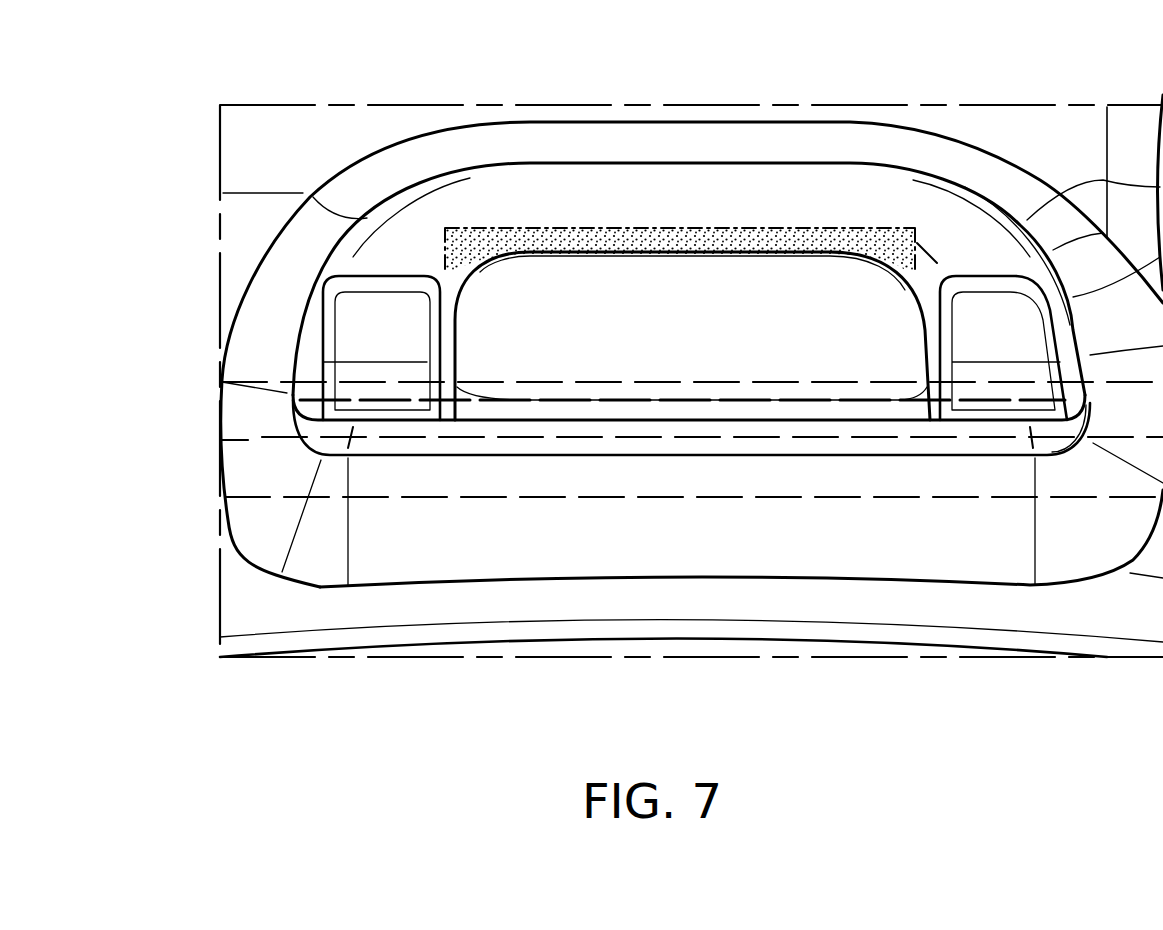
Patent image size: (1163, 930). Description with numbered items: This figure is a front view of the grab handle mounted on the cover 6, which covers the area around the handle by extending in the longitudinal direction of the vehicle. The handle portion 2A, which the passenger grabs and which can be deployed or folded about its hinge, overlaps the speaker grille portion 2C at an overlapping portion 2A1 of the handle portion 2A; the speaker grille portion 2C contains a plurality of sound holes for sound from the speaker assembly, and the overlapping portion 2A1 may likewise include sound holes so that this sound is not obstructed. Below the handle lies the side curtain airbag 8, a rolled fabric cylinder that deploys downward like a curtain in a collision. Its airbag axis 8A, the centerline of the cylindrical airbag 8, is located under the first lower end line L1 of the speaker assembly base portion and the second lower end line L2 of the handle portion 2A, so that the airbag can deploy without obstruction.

The handle portion 2A is at (722, 188).
The overlapping portion 2A1 is at (472, 228).
The speaker grille portion 2C is at (900, 303).
The cover 6 is at (840, 121).
The side curtain airbag 8 is at (220, 390).
The airbag axis 8A is at (248, 440).
The first lower end line L1 is at (335, 378).
The second lower end line L2 is at (677, 423).